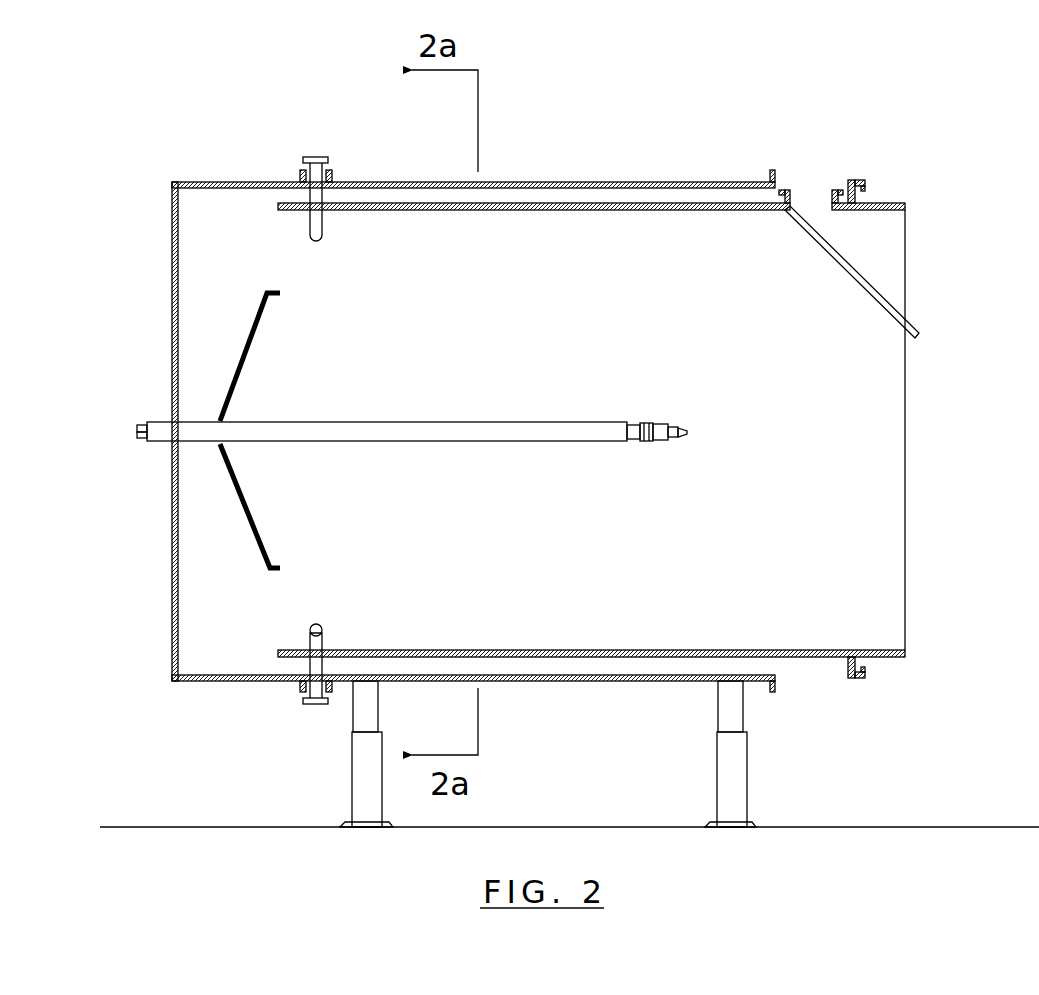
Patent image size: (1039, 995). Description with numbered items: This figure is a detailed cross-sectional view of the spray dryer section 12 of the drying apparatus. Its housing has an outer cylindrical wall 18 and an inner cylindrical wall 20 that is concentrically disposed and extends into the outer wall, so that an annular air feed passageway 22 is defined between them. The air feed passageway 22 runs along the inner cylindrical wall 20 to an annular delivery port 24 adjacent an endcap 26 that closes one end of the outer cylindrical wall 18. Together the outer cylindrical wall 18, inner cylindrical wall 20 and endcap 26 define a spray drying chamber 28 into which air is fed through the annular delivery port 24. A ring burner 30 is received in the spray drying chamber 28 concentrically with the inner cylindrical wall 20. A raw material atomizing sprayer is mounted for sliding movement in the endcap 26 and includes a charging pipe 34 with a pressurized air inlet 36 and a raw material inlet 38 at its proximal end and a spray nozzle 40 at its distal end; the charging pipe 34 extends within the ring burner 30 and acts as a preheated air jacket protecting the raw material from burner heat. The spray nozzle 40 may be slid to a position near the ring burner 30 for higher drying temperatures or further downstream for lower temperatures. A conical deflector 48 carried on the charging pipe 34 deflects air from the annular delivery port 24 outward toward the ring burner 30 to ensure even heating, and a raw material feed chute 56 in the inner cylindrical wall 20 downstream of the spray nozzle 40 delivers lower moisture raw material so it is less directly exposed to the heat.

The spray dryer section 12 is at (482, 412).
The outer cylindrical wall 18 is at (550, 182).
The inner cylindrical wall 20 is at (592, 211).
The annular air feed passageway 22 is at (367, 198).
The annular delivery port 24 is at (278, 197).
The endcap 26 is at (170, 326).
The spray drying chamber 28 is at (548, 612).
The ring burner 30 is at (319, 622).
The charging pipe 34 is at (505, 435).
The pressurized air inlet 36 is at (130, 437).
The raw material inlet 38 is at (135, 424).
The spray nozzle 40 is at (682, 433).
The conical deflector 48 is at (245, 522).
The raw material feed chute 56 is at (875, 290).